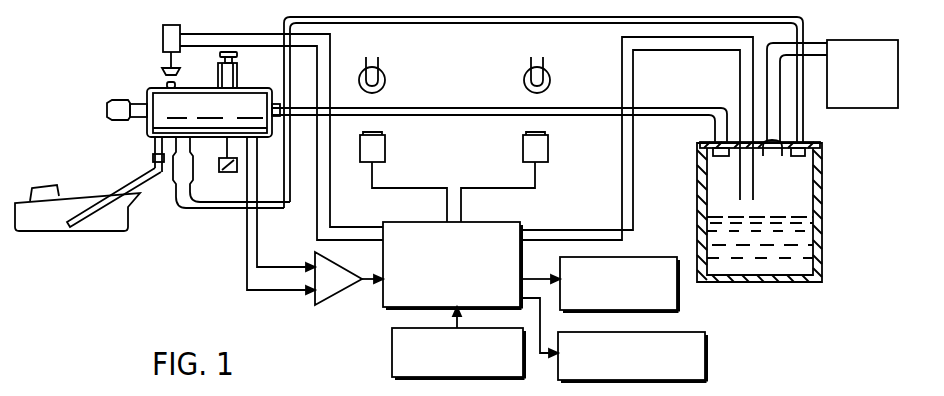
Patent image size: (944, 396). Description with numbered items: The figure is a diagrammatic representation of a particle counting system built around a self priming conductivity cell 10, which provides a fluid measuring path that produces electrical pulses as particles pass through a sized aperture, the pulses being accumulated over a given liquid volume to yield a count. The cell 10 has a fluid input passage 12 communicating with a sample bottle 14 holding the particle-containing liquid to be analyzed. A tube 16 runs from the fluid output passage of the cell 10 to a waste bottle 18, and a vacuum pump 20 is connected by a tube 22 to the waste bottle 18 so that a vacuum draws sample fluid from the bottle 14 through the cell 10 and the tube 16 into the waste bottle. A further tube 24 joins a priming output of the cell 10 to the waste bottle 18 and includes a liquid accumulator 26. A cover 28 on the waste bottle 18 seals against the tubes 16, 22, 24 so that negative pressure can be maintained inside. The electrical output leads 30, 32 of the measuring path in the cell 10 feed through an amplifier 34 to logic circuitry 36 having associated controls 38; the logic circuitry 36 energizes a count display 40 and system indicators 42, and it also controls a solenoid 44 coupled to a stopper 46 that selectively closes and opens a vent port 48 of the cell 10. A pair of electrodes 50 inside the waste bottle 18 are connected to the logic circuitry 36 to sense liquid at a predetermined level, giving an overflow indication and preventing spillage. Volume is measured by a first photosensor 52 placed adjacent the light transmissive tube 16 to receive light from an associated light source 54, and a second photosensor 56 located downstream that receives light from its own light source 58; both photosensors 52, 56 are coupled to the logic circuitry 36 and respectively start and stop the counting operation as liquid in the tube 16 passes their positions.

The conductivity cell 10 is at (163, 113).
The fluid input passage 12 is at (155, 166).
The sample bottle 14 is at (88, 172).
The tube 16 is at (462, 118).
The waste bottle 18 is at (822, 212).
The vacuum pump 20 is at (881, 108).
The tube 22 is at (812, 43).
The tube 24 is at (467, 26).
The liquid accumulator 26 is at (178, 175).
The cover 28 is at (818, 145).
The electrical output lead 30 is at (264, 266).
The electrical output lead 32 is at (276, 291).
The amplifier 34 is at (340, 298).
The logic circuitry 36 is at (395, 307).
The controls 38 is at (392, 368).
The count display 40 is at (677, 302).
The system indicators 42 is at (705, 370).
The solenoid 44 is at (163, 34).
The stopper 46 is at (163, 71).
The vent port 48 is at (167, 84).
The electrodes 50 is at (753, 195).
The first photosensor 52 is at (385, 151).
The light source 54 is at (386, 78).
The second photosensor 56 is at (548, 155).
The light source 58 is at (551, 78).